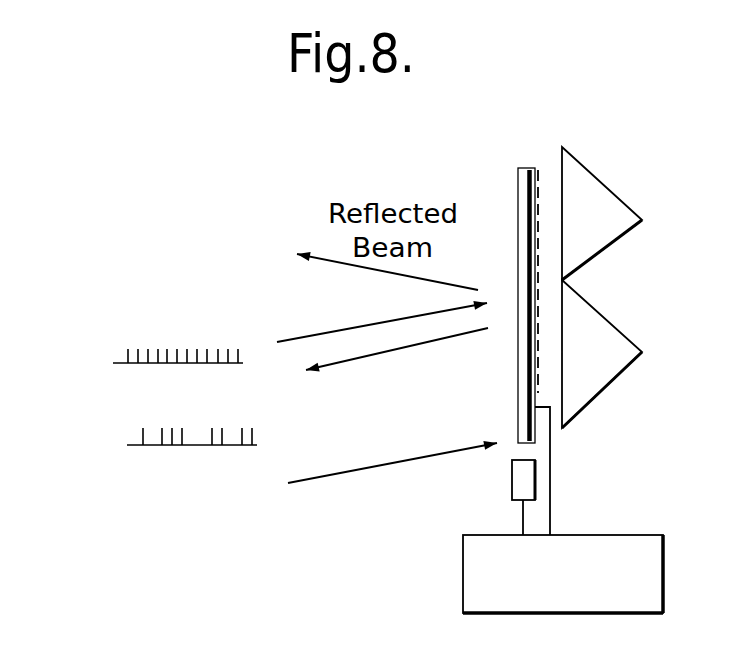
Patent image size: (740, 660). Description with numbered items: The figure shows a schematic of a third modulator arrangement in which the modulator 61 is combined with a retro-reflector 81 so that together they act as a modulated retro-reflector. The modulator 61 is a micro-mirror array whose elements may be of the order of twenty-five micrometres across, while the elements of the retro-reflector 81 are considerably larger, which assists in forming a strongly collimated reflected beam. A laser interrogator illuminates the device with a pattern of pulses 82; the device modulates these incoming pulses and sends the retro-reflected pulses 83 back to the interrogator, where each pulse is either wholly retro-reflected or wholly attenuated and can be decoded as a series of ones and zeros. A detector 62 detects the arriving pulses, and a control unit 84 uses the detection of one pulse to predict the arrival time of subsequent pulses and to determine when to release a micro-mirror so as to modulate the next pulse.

The modulator 61 is at (523, 197).
The retro-reflector 81 is at (600, 205).
The detector 62 is at (523, 477).
The control unit 84 is at (484, 577).
The pattern of pulses 82 is at (124, 365).
The retro-reflected pulses 83 is at (157, 447).